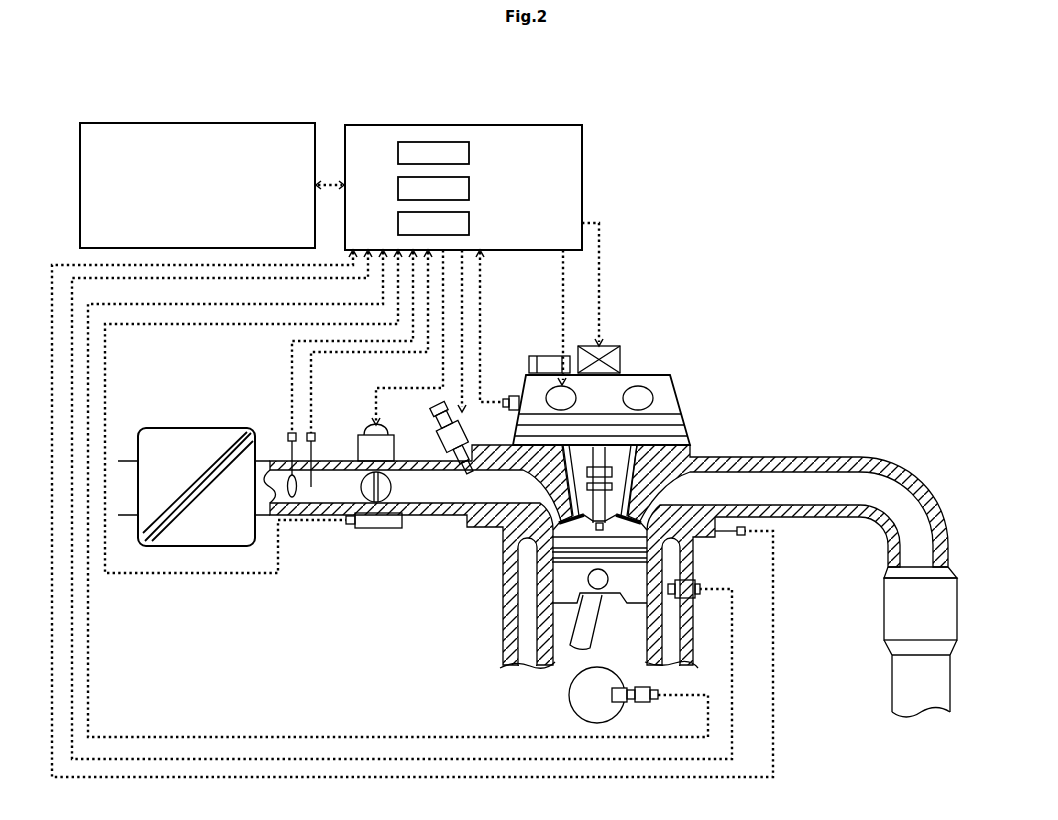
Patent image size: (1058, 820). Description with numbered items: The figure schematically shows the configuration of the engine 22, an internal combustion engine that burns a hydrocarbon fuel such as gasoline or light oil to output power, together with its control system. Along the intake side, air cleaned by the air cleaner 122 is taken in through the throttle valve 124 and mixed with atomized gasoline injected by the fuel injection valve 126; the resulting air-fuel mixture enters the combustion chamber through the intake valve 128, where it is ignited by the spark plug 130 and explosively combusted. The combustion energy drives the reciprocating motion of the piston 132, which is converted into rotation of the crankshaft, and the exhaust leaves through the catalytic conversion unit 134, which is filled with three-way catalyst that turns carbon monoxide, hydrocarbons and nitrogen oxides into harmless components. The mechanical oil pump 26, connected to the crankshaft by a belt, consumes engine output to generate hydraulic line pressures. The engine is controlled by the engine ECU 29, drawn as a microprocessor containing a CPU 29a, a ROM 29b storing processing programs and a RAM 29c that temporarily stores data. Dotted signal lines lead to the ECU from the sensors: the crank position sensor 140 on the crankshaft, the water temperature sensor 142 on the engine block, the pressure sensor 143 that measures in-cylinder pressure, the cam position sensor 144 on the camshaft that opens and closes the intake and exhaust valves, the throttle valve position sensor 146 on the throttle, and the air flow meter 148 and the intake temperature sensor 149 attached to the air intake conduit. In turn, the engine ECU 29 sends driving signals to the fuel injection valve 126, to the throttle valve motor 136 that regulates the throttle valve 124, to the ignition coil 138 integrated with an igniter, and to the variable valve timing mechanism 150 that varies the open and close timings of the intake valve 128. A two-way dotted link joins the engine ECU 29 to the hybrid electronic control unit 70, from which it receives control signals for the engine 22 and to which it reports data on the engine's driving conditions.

The hybrid electronic control unit 70 is at (195, 123).
The engine electronic control unit 29 is at (463, 159).
The CPU 29a is at (469, 153).
The ROM 29b is at (469, 188).
The RAM 29c is at (469, 223).
The engine 22 is at (593, 502).
The air cleaner 122 is at (194, 428).
The throttle valve 124 is at (397, 470).
The fuel injection valve 126 is at (465, 478).
The intake valve 128 is at (562, 505).
The spark plug 130 is at (633, 508).
The piston 132 is at (563, 579).
The catalytic conversion unit 134 is at (893, 597).
The throttle valve motor 136 is at (361, 434).
The ignition coil 138 is at (622, 362).
The crank position sensor 140 is at (645, 703).
The water temperature sensor 142 is at (693, 584).
The pressure sensor 143 is at (746, 530).
The cam position sensor 144 is at (512, 395).
The throttle valve position sensor 146 is at (376, 530).
The air flow meter 148 is at (288, 434).
The temperature sensor 149 is at (313, 432).
The variable valve timing mechanism 150 is at (688, 410).
The mechanical oil pump 26 is at (568, 694).